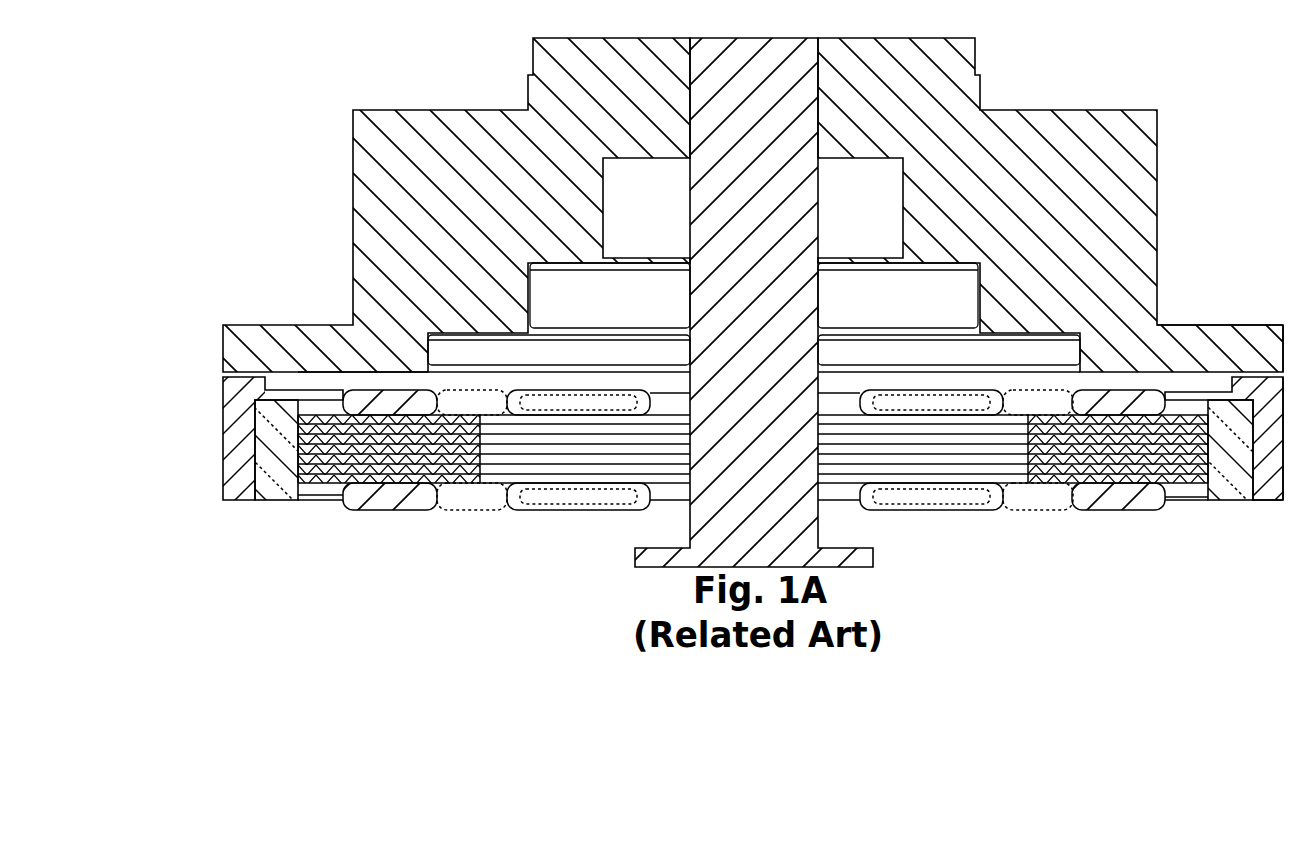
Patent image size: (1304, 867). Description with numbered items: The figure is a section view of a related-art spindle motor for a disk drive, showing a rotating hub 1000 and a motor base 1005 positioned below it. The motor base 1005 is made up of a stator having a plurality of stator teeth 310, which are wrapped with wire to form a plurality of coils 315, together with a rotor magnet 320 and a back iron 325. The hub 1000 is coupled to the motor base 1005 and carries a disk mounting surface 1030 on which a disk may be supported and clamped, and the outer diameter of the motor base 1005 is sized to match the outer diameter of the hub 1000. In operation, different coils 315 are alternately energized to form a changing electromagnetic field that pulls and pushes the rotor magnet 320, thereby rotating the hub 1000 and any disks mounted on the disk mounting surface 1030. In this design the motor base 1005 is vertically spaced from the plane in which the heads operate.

The rotating hub 1000 is at (218, 32).
The motor base 1005 is at (218, 383).
The disk mounting surface 1030 is at (1218, 325).
The stator teeth 310 is at (360, 445).
The coils 315 is at (615, 495).
The rotor magnet 320 is at (1228, 490).
The back iron 325 is at (1268, 493).